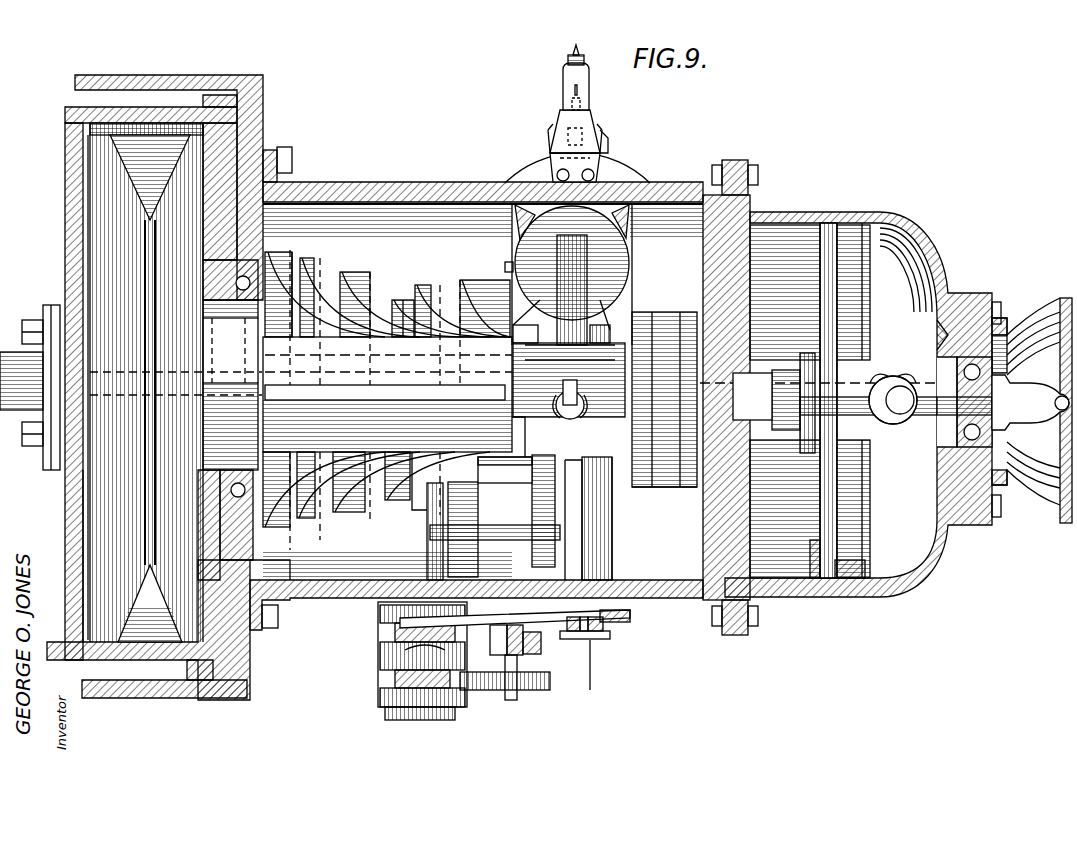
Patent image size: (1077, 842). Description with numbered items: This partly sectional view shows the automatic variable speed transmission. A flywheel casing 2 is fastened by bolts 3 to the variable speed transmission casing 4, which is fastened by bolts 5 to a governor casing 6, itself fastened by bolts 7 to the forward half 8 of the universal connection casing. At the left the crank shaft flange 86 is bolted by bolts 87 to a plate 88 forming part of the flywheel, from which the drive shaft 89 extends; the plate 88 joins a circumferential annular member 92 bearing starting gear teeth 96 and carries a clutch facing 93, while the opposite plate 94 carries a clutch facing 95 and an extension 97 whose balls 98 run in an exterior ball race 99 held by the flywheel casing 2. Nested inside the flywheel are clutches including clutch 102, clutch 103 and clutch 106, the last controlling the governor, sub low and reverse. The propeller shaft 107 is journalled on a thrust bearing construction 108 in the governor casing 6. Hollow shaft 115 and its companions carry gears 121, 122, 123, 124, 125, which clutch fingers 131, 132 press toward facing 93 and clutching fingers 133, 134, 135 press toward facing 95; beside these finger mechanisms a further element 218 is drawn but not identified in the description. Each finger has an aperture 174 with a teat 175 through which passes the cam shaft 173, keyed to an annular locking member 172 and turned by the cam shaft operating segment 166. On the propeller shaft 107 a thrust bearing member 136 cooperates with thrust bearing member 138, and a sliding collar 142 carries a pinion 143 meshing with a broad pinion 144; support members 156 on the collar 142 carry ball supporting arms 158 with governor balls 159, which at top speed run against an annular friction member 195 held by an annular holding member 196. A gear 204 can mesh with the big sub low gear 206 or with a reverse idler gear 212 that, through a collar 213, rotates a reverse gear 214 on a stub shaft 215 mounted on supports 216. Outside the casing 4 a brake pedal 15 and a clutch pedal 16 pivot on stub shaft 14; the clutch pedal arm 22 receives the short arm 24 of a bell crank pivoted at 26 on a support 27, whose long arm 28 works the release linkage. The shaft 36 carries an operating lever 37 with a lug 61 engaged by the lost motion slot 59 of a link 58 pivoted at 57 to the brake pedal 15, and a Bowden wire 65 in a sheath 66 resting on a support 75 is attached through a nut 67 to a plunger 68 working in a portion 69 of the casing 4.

The flywheel casing 2 is at (166, 78).
The bolts 3 is at (292, 160).
The variable speed transmission casing 4 is at (425, 184).
The bolts 5 is at (758, 185).
The governor casing 6 is at (876, 212).
The bolts 7 is at (1001, 310).
The forward half of universal connection casing 8 is at (1038, 320).
The stub shaft 14 is at (405, 720).
The brake pedal 15 is at (395, 632).
The clutch pedal 16 is at (395, 680).
The horizontally extending arm 22 is at (548, 688).
The short arm 24 is at (511, 700).
The pivot 26 is at (541, 645).
The support 27 is at (498, 650).
The long arm 28 is at (520, 660).
The shaft 36 is at (598, 640).
The operating lever 37 is at (612, 634).
The pivot 57 is at (410, 648).
The link 58 is at (485, 620).
The lost motion slot 59 is at (632, 618).
The lug 61 is at (592, 650).
The Bowden wire 65 is at (573, 49).
The sheath 66 is at (568, 61).
The nut 67 is at (584, 114).
The plunger 68 is at (550, 138).
The portion of the casing 69 is at (606, 138).
The support 75 is at (590, 98).
The flange 86 is at (48, 466).
The bolts 87 is at (35, 320).
The plate 88 is at (63, 508).
The drive shaft 89 is at (176, 354).
The circumferential annular member 92 is at (145, 686).
The clutch facing 93 is at (72, 538).
The plate 94 is at (215, 650).
The clutch facing 95 is at (200, 553).
The starting gear teeth 96 is at (203, 680).
The extension 97 is at (262, 298).
The balls 98 is at (278, 268).
The exterior ball race 99 is at (268, 256).
The clutch 102 is at (95, 168).
The clutch 103 is at (212, 165).
The clutch 106 is at (88, 240).
The propeller shaft 107 is at (930, 395).
The thrust bearing construction 108 is at (1007, 363).
The hollow shaft 115 is at (212, 310).
The gear 121 is at (432, 300).
The gear 122 is at (400, 305).
The gear 123 is at (394, 300).
The gear 124 is at (342, 274).
The gear 125 is at (302, 262).
The clutch finger 131 is at (430, 500).
The clutch finger 132 is at (398, 502).
The clutching finger 133 is at (336, 514).
The clutching finger 134 is at (300, 520).
The clutching finger 135 is at (266, 528).
The thrust bearing member 136 is at (838, 365).
The thrust bearing member 138 is at (802, 445).
The collar 142 is at (752, 420).
The pinion 143 is at (667, 490).
The broad pinion 144 is at (645, 488).
The support members 156 is at (778, 372).
The ball supporting arms 158 is at (870, 430).
The governor balls 159 is at (898, 425).
The cam shaft operating segment 166 is at (505, 266).
The annular locking member 172 is at (630, 262).
The cam shaft 173 is at (615, 305).
The aperture 174 is at (545, 418).
The teat 175 is at (588, 420).
The annular friction member 195 is at (848, 597).
The annular holding member 196 is at (815, 597).
The gear 204 is at (505, 450).
The big sub low gear 206 is at (452, 295).
The reverse idler gear 212 is at (612, 542).
The collar 213 is at (522, 540).
The reverse gear 214 is at (478, 555).
The stub shaft 215 is at (600, 525).
The supports 216 is at (600, 561).
The bar 218 is at (430, 560).